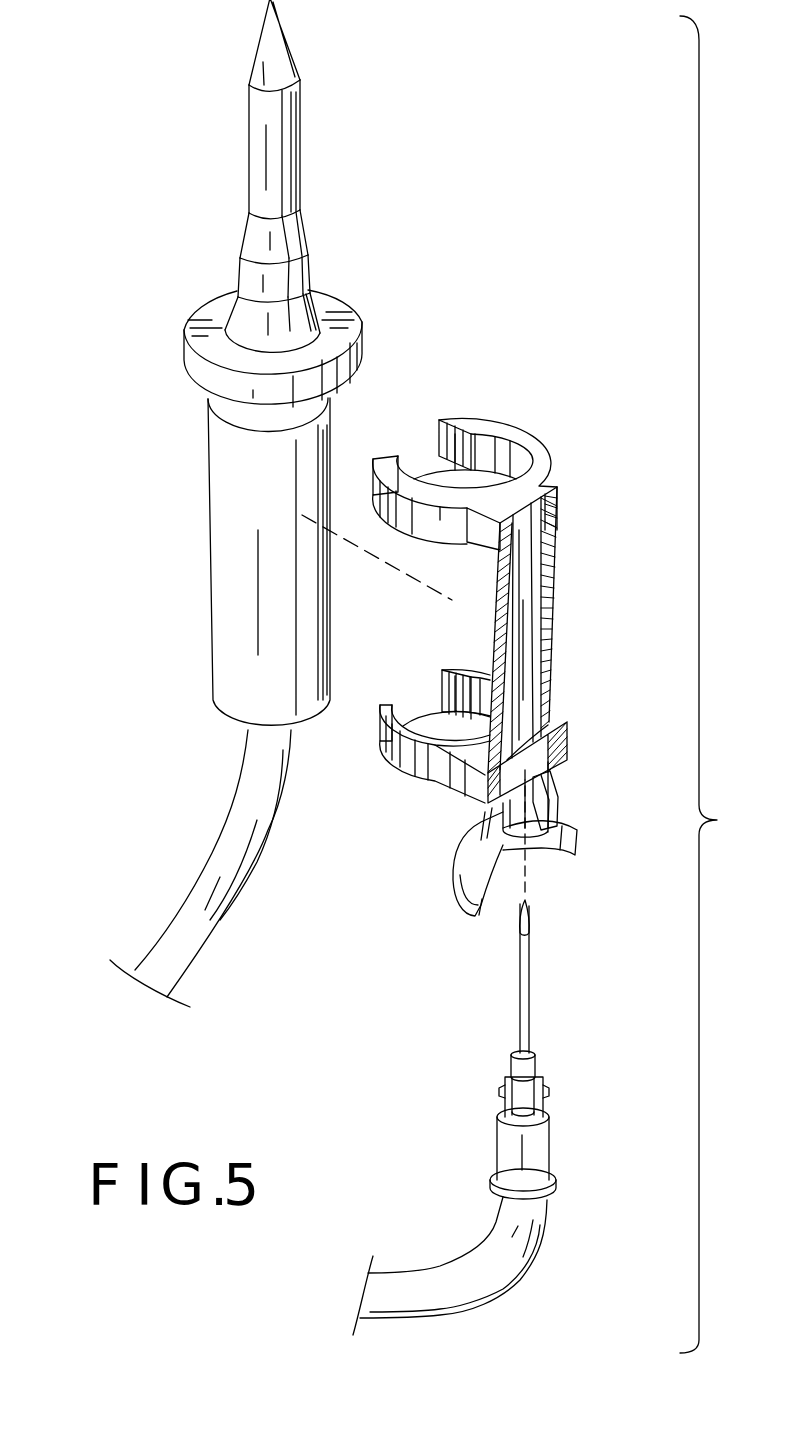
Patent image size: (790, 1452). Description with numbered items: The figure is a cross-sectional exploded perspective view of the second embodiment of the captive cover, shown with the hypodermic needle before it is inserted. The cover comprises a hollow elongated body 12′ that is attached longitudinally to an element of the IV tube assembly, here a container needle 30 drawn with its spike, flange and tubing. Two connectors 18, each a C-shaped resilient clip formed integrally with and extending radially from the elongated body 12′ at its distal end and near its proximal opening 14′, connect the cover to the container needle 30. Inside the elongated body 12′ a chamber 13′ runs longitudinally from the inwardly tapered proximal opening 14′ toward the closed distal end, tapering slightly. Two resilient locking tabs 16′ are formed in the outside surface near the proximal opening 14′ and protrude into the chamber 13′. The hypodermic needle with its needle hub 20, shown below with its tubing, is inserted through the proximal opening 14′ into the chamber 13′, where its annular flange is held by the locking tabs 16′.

The container needle 30 is at (215, 527).
The connector 18 is at (493, 425).
The elongated body 12′ is at (552, 596).
The chamber 13′ is at (530, 670).
The locking tab 16′ is at (540, 797).
The proximal opening 14′ is at (548, 843).
The needle hub 20 is at (532, 1162).